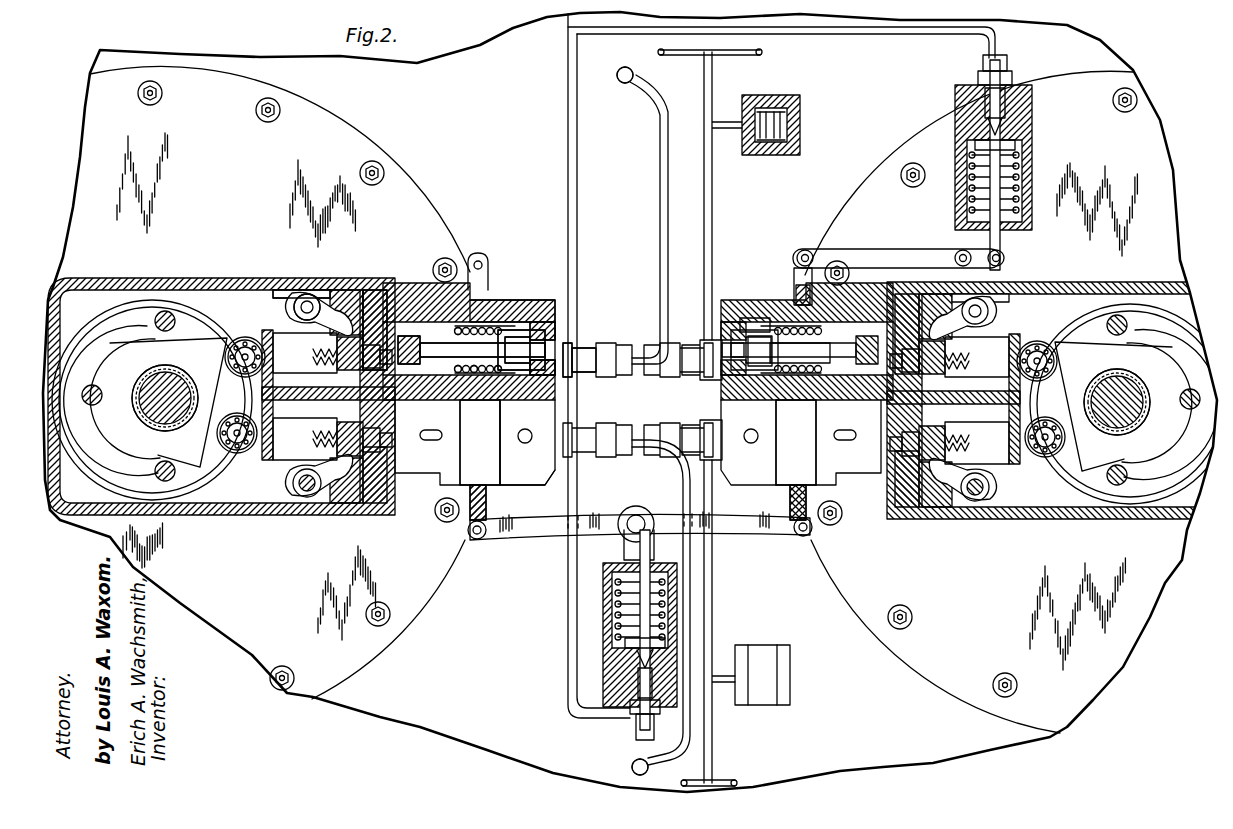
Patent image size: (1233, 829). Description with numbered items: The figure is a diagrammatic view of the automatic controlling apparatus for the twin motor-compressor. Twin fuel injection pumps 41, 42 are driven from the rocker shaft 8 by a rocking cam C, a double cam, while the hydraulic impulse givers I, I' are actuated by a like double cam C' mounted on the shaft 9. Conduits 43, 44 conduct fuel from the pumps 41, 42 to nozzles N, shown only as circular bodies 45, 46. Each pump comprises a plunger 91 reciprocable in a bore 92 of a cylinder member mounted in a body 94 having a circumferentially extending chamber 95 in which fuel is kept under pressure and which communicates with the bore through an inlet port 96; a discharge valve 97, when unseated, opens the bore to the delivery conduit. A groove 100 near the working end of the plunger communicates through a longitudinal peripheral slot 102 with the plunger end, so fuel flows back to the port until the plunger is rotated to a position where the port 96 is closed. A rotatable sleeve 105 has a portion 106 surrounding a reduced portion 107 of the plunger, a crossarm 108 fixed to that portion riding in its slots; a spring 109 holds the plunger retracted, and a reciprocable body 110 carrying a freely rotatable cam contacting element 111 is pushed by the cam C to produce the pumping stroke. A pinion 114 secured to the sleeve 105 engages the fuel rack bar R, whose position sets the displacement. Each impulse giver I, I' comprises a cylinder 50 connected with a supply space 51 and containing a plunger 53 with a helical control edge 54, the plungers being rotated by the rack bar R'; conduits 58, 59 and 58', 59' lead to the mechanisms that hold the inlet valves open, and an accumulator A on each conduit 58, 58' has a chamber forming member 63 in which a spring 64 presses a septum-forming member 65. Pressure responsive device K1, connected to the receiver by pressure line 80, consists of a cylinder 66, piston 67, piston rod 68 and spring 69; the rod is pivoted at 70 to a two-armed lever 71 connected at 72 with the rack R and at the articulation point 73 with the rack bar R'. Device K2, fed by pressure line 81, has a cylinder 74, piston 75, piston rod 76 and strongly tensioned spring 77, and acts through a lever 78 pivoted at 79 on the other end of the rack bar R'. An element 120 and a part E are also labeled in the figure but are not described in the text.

The shaft 8 is at (155, 385).
The shaft 9 is at (1140, 390).
The fuel injection pump 41 is at (522, 322).
The fuel injection pump 42 is at (526, 463).
The conduit 43 is at (657, 210).
The conduit 44 is at (683, 482).
The nozzle 45 is at (635, 78).
The nozzle 46 is at (634, 760).
The cylinder 50 is at (770, 318).
The supply space 51 is at (792, 300).
The plunger 53 is at (797, 335).
The control edge 54 is at (748, 335).
The conduit 58 is at (709, 196).
The conduit 58' is at (738, 621).
The conduit 59 is at (710, 64).
The conduit 59' is at (719, 767).
The chamber forming member 63 is at (765, 152).
The spring 64 is at (785, 128).
The septum-forming member 65 is at (765, 110).
The cylinder 66 is at (655, 667).
The piston 67 is at (638, 668).
The piston rod 68 is at (640, 597).
The spring 69 is at (665, 600).
The point of pivotal connection 70 is at (630, 518).
The two-armed lever 71 is at (535, 536).
The connection point 72 is at (477, 540).
The articulation point 73 is at (803, 537).
The cylinder 74 is at (1002, 105).
The piston 75 is at (985, 104).
The piston rod 76 is at (985, 196).
The spring 77 is at (1020, 172).
The lever 78 is at (868, 250).
The pivot 79 is at (958, 254).
The pressure line 80 is at (567, 125).
The pressure line 81 is at (890, 35).
The plunger 91 is at (452, 343).
The bore 92 is at (494, 376).
The body 94 is at (498, 318).
The circumferentially extending chamber 95 is at (511, 376).
The inlet port 96 is at (527, 376).
The discharge valve 97 is at (570, 352).
The groove 100 is at (541, 330).
The longitudinal peripheral slot 102 is at (537, 340).
The rotatable sleeve 105 is at (464, 378).
The sleeve portion 106 is at (432, 378).
The reduced portion 107 is at (375, 292).
The crossarm 108 is at (418, 300).
The spring 109 is at (433, 322).
The reciprocable body 110 is at (298, 298).
The cam contacting element 111 is at (232, 294).
The pinion 114 is at (489, 262).
The flange 120 is at (558, 345).
The accumulator A is at (800, 116).
The rocking cam C is at (221, 411).
The cam actuating means C' is at (1060, 415).
The valve E is at (507, 401).
The hydraulic impulse giver I is at (792, 262).
The hydraulic impulse giver I' is at (768, 401).
The pressure responsive device K1 is at (603, 678).
The receiver pressure responsive device K2 is at (1032, 138).
The nozzle N is at (630, 69).
The regulating rack R is at (492, 502).
The rack bar R' is at (782, 526).